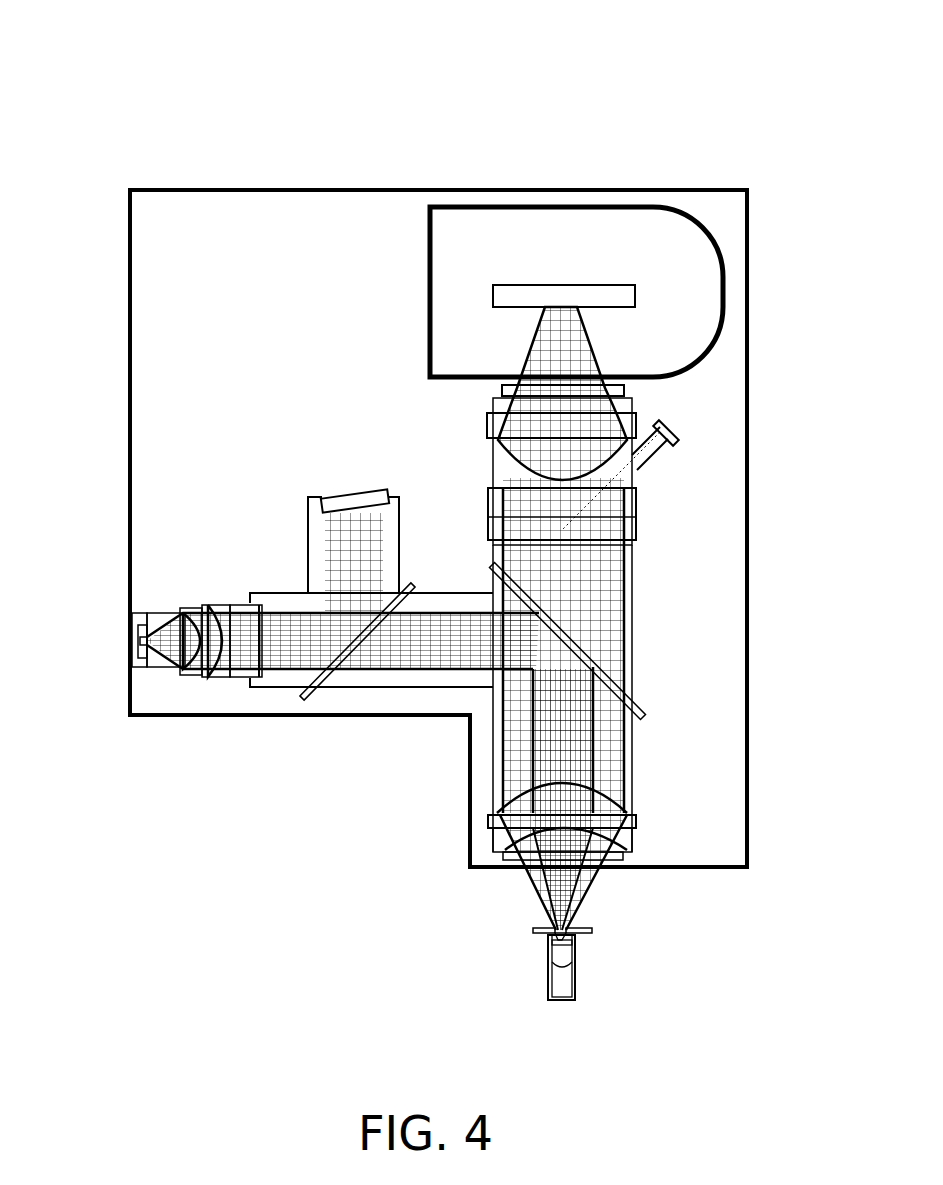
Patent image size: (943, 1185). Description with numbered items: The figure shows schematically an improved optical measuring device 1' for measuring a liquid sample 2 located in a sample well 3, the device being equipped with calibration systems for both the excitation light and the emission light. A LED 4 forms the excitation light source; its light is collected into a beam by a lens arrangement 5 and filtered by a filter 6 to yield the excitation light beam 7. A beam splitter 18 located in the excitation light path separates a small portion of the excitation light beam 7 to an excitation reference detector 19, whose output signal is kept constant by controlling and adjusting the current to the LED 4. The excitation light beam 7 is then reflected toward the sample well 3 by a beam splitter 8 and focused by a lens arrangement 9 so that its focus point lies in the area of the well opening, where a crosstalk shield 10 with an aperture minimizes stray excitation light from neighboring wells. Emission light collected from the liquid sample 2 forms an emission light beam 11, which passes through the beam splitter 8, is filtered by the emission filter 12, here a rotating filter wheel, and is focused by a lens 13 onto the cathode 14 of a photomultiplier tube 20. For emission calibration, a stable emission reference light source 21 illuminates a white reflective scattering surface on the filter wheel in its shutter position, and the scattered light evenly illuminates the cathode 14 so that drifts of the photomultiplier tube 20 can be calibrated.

The optical measuring device 1' is at (408, 439).
The liquid sample 2 is at (563, 980).
The sample well 3 is at (578, 967).
The LED 4 is at (140, 642).
The lens arrangement 5 is at (205, 675).
The filter 6 is at (242, 677).
The excitation light beam 7 is at (295, 643).
The beam splitter 8 is at (585, 640).
The lens arrangement 9 is at (617, 855).
The crosstalk shield 10 is at (594, 931).
The emission light beam 11 is at (605, 765).
The emission filter 12 is at (633, 528).
The lens 13 is at (627, 423).
The cathode 14 is at (590, 292).
The beam splitter 18 is at (317, 680).
The excitation reference detector 19 is at (352, 500).
The photomultiplier tube 20 is at (633, 205).
The emission reference light source 21 is at (675, 428).